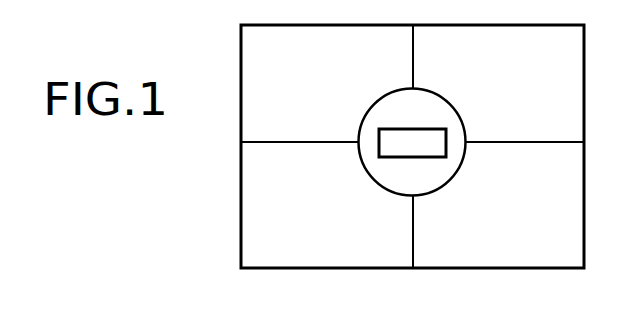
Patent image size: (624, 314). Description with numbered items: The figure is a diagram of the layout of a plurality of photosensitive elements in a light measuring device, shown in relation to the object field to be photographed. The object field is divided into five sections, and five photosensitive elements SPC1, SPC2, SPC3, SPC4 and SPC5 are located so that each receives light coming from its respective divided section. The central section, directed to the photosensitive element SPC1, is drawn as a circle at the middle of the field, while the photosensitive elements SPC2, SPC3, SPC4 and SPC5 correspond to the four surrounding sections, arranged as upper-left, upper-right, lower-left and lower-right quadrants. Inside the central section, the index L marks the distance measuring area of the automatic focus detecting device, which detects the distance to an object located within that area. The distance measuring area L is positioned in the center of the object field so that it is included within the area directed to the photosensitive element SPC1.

The photosensitive element SPC1 is at (386, 97).
The photosensitive element SPC2 is at (327, 83).
The photosensitive element SPC3 is at (498, 83).
The photosensitive element SPC4 is at (327, 205).
The photosensitive element SPC5 is at (498, 205).
The distance measuring area L is at (427, 128).